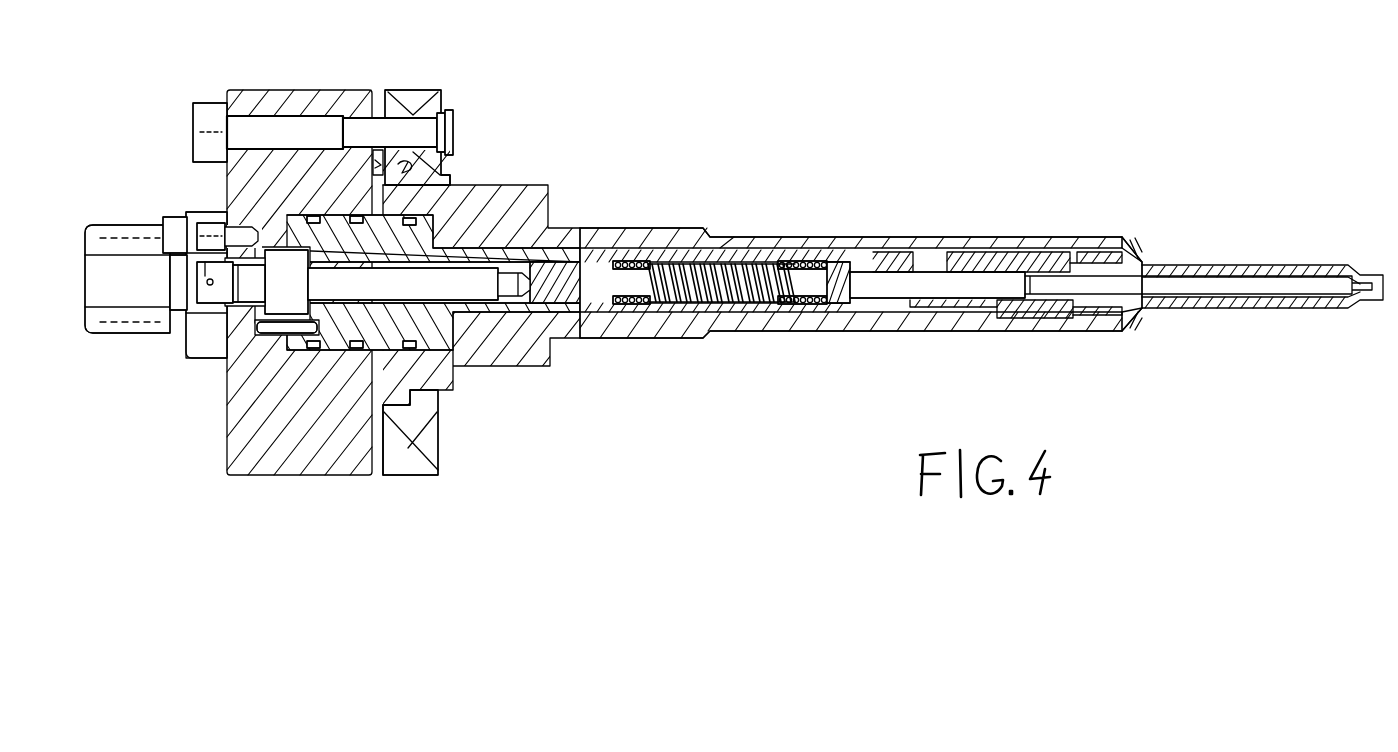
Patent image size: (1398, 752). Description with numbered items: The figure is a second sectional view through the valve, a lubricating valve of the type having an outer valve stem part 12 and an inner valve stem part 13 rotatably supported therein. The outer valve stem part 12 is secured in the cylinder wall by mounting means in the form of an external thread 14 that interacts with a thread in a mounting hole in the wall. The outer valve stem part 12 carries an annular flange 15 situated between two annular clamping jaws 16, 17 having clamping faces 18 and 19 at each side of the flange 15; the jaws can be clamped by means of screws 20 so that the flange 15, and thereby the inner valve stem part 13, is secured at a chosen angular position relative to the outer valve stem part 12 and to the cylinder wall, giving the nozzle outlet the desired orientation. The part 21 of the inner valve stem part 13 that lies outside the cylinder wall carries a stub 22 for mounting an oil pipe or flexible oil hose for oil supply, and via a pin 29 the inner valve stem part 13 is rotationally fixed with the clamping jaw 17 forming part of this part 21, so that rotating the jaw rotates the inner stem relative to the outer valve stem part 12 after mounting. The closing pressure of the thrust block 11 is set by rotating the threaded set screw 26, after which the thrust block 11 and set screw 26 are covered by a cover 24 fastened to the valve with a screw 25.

The thrust block 11 is at (586, 298).
The outer valve stem part 12 is at (507, 205).
The inner valve stem part 13 is at (947, 256).
The external thread 14 is at (638, 230).
The annular flange 15 is at (465, 160).
The annular clamping jaw 16 is at (413, 93).
The annular clamping jaw 17 is at (366, 98).
The clamping face 18 is at (403, 171).
The clamping face 19 is at (375, 162).
The screw 20 is at (213, 110).
The part of the inner valve stem part provided outside the cylinder wall 21 is at (293, 78).
The stub 22 is at (139, 333).
The cover 24 is at (197, 358).
The screw 25 is at (163, 219).
The set screw 26 is at (360, 283).
The pin 29 is at (278, 330).